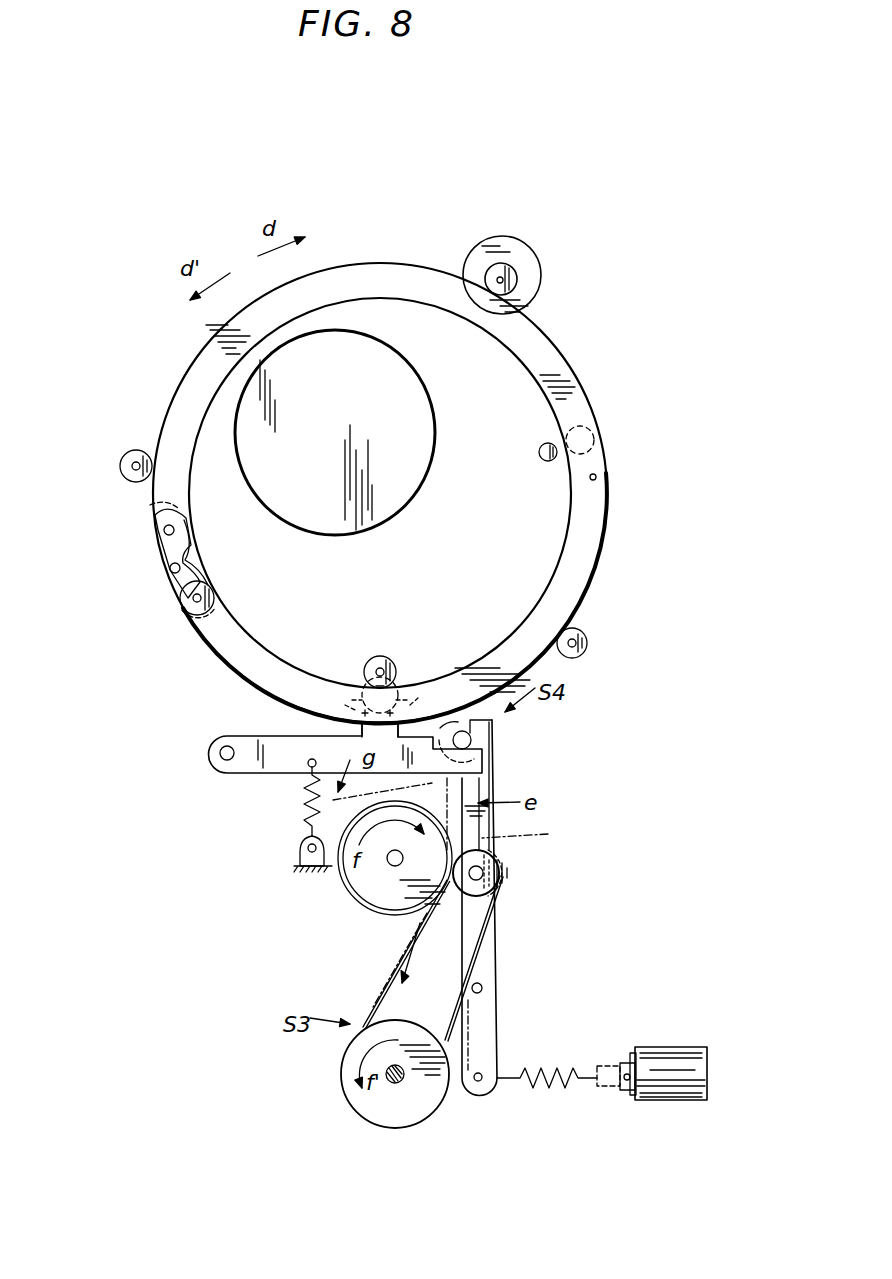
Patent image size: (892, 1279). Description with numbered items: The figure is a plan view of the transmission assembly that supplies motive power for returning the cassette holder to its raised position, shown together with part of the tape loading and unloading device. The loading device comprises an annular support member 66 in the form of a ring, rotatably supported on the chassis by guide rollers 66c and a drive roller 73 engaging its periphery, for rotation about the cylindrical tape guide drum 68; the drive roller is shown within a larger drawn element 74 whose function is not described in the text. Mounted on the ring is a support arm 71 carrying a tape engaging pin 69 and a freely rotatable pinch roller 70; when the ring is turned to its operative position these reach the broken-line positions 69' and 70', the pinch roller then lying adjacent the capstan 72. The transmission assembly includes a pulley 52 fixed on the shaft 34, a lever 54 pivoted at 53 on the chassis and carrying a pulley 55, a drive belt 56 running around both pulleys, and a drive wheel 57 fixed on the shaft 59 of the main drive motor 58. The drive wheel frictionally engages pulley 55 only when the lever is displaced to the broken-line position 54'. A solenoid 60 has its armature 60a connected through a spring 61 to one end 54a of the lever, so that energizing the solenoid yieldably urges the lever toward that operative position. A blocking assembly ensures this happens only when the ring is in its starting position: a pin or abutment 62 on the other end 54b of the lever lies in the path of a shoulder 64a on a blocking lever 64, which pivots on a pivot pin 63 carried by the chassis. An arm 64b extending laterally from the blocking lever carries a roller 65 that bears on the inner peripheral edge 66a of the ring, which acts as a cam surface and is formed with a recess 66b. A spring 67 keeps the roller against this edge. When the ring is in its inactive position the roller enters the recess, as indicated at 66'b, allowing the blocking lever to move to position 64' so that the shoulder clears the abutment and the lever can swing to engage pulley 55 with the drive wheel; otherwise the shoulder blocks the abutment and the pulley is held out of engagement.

The shaft 34 is at (395, 1084).
The pulley 52 is at (425, 1108).
The pivot 53 is at (483, 988).
The lever 54 is at (496, 908).
The operative position of lever 54' is at (534, 837).
The end of lever 54a is at (490, 1062).
The end of lever 54b is at (494, 750).
The pulley 55 is at (504, 858).
The drive belt 56 is at (455, 1026).
The drive wheel 57 is at (350, 870).
The main drive motor 58 is at (372, 912).
The shaft 59 is at (388, 862).
The solenoid 60 is at (697, 1047).
The armature 60a is at (626, 1062).
The spring 61 is at (568, 1090).
The pin or abutment 62 is at (472, 740).
The pivot pin 63 is at (216, 760).
The blocking lever 64 is at (346, 771).
The released position of blocking lever 64' is at (382, 799).
The shoulder 64a is at (455, 724).
The arm 64b is at (357, 690).
The roller 65 is at (383, 657).
The annular support member 66 is at (397, 493).
The inner peripheral edge 66a is at (560, 520).
The recess 66b is at (184, 563).
The recess receiving roller 66'b is at (410, 675).
The guide rollers 66c is at (130, 455).
The spring 67 is at (305, 828).
The tape guide drum 68 is at (435, 432).
The tape engaging pin 69 is at (152, 592).
The operative position of tape engaging pin 69' is at (634, 476).
The pinch roller 70 is at (184, 631).
The operative position of pinch roller 70' is at (620, 433).
The support arm 71 is at (160, 513).
The capstan 72 is at (548, 461).
The drive roller 73 is at (514, 272).
The guide roller 74 is at (520, 224).